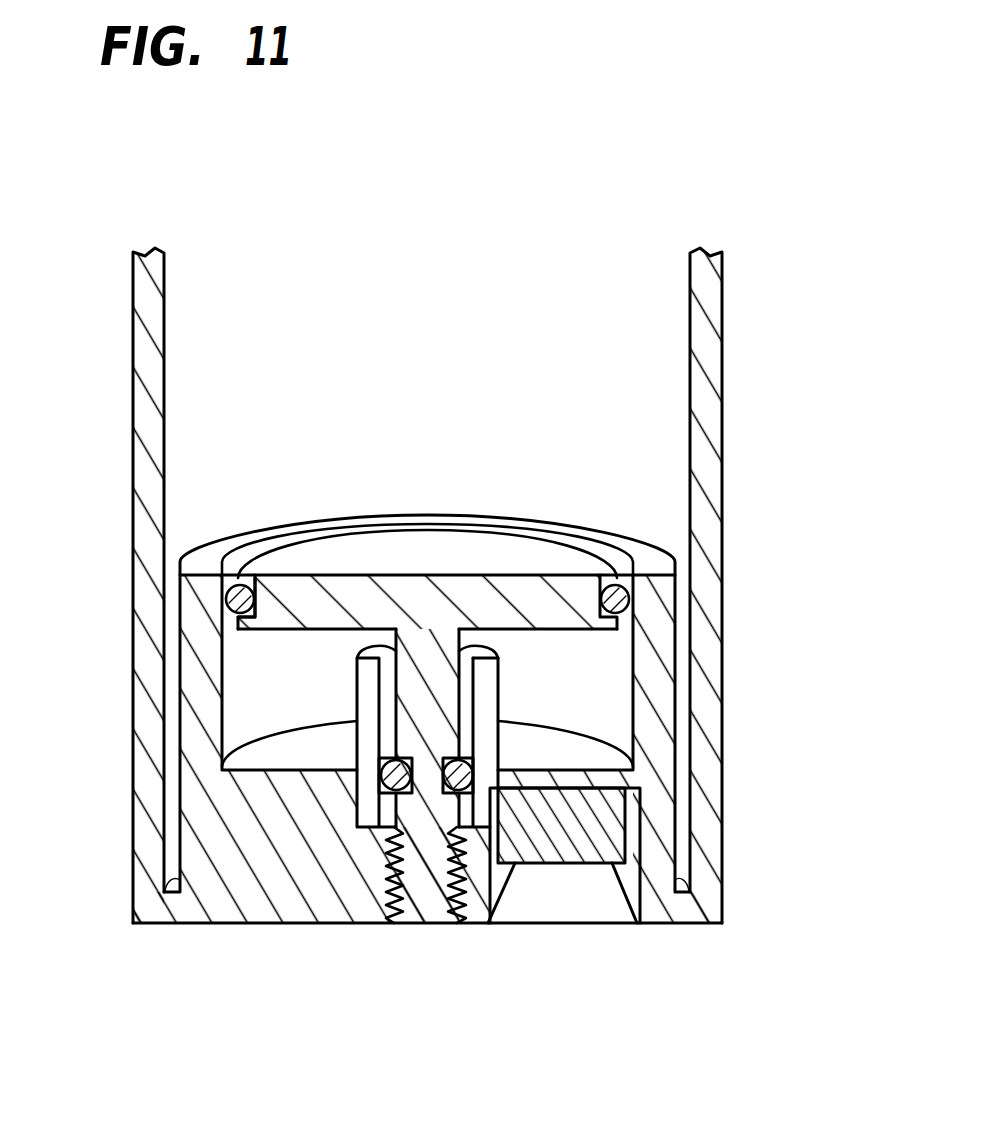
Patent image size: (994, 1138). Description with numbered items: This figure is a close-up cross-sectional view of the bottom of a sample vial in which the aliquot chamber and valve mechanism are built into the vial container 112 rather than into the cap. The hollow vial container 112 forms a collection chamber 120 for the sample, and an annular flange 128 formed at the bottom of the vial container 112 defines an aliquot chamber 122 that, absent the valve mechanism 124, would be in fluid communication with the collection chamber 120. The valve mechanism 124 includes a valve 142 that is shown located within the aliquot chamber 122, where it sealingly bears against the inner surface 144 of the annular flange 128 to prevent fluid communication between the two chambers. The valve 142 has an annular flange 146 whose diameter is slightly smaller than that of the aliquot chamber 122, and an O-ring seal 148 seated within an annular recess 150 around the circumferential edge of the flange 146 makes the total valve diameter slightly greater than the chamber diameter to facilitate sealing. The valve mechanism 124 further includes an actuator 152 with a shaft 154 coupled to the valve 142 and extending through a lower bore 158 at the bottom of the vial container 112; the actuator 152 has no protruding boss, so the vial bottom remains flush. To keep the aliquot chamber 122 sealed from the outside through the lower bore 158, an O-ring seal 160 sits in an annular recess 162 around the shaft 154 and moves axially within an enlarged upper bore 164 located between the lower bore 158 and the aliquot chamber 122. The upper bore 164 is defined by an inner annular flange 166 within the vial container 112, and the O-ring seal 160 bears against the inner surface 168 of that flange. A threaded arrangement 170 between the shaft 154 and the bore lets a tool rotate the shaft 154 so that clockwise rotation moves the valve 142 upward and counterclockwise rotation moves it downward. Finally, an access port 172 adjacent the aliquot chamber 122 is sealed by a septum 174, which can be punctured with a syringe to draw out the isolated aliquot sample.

The vial container 112 is at (723, 312).
The collection chamber 120 is at (647, 418).
The aliquot chamber 122 is at (616, 705).
The valve mechanism 124 is at (418, 518).
The annular flange 128 is at (625, 533).
The valve 142 is at (507, 569).
The inner surface 144 is at (222, 654).
The annular flange 146 is at (322, 552).
The O-ring seal 148 is at (236, 601).
The annular recess 150 is at (255, 605).
The actuator 152 is at (419, 925).
The shaft 154 is at (427, 880).
The lower bore 158 is at (450, 908).
The O-ring seal 160 is at (394, 790).
The annular recess 162 is at (408, 757).
The upper bore 164 is at (388, 698).
The inner annular flange 166 is at (487, 640).
The inner surface 168 is at (478, 672).
The threaded arrangement 170 is at (460, 912).
The access port 172 is at (598, 903).
The septum 174 is at (607, 817).